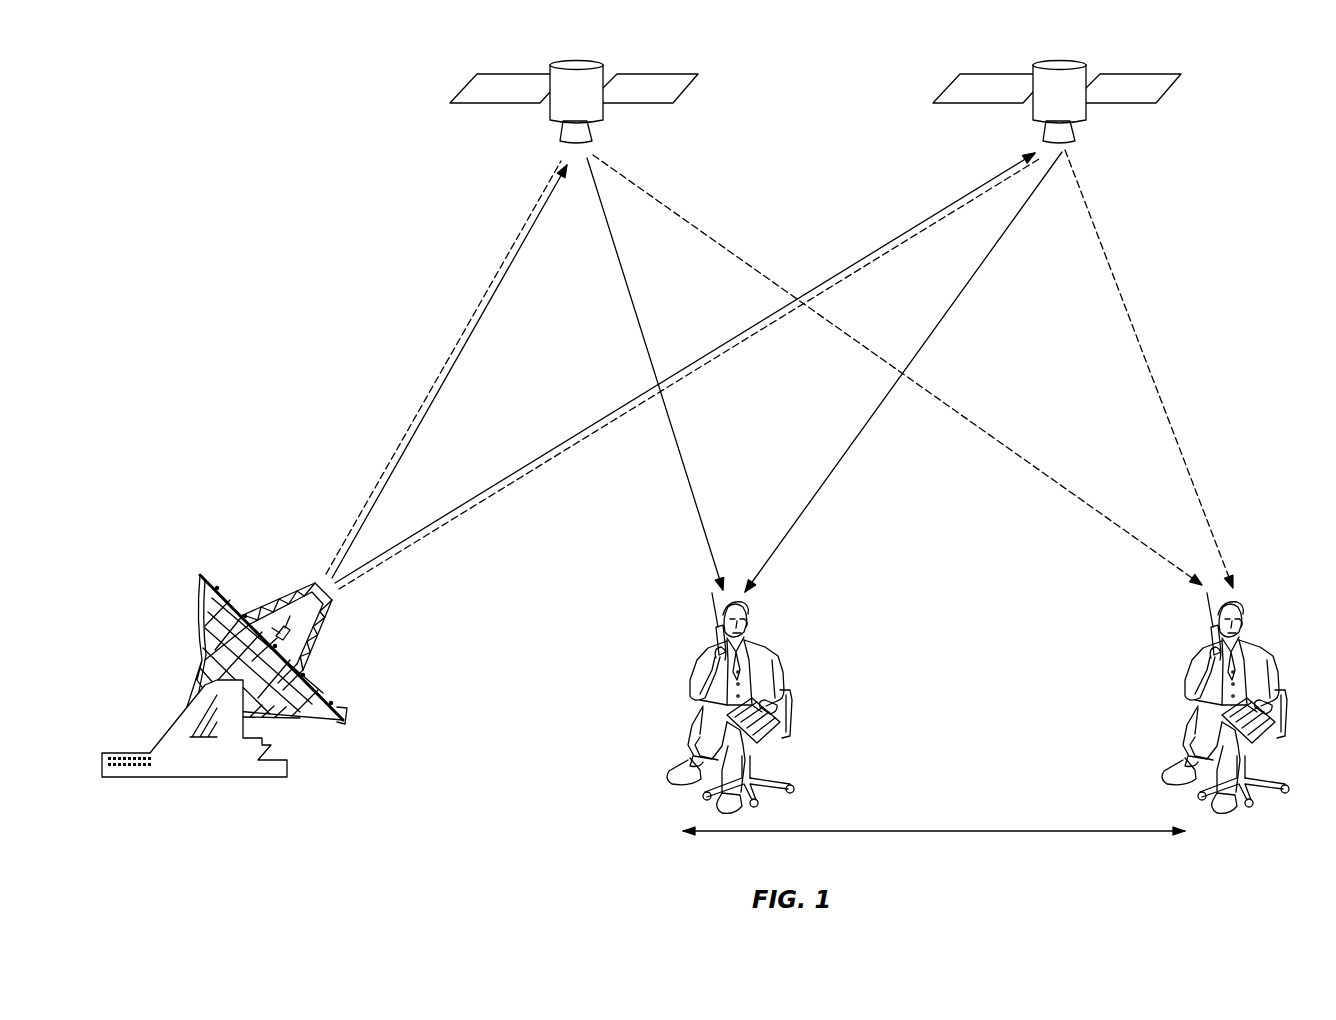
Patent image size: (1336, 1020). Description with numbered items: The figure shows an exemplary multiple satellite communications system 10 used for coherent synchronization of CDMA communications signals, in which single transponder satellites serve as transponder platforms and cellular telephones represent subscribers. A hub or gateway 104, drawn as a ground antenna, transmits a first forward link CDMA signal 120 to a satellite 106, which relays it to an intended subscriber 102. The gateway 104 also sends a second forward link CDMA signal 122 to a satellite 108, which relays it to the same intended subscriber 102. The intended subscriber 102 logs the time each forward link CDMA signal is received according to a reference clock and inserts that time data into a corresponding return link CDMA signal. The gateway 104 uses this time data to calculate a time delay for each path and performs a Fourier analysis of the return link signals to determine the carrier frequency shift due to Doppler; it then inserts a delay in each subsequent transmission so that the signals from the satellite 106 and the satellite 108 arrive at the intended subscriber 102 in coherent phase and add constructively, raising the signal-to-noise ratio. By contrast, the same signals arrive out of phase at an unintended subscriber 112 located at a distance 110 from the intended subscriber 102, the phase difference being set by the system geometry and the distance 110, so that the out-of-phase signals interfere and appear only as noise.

The multiple satellite communications system 10 is at (1250, 164).
The intended subscriber 102 is at (722, 627).
The gateway 104 is at (200, 575).
The satellite 106 is at (548, 112).
The satellite 108 is at (1032, 112).
The distance 110 is at (977, 830).
The unintended subscriber 112 is at (1217, 627).
The first forward link CDMA signal 120 is at (467, 330).
The second forward link CDMA signal 122 is at (593, 427).